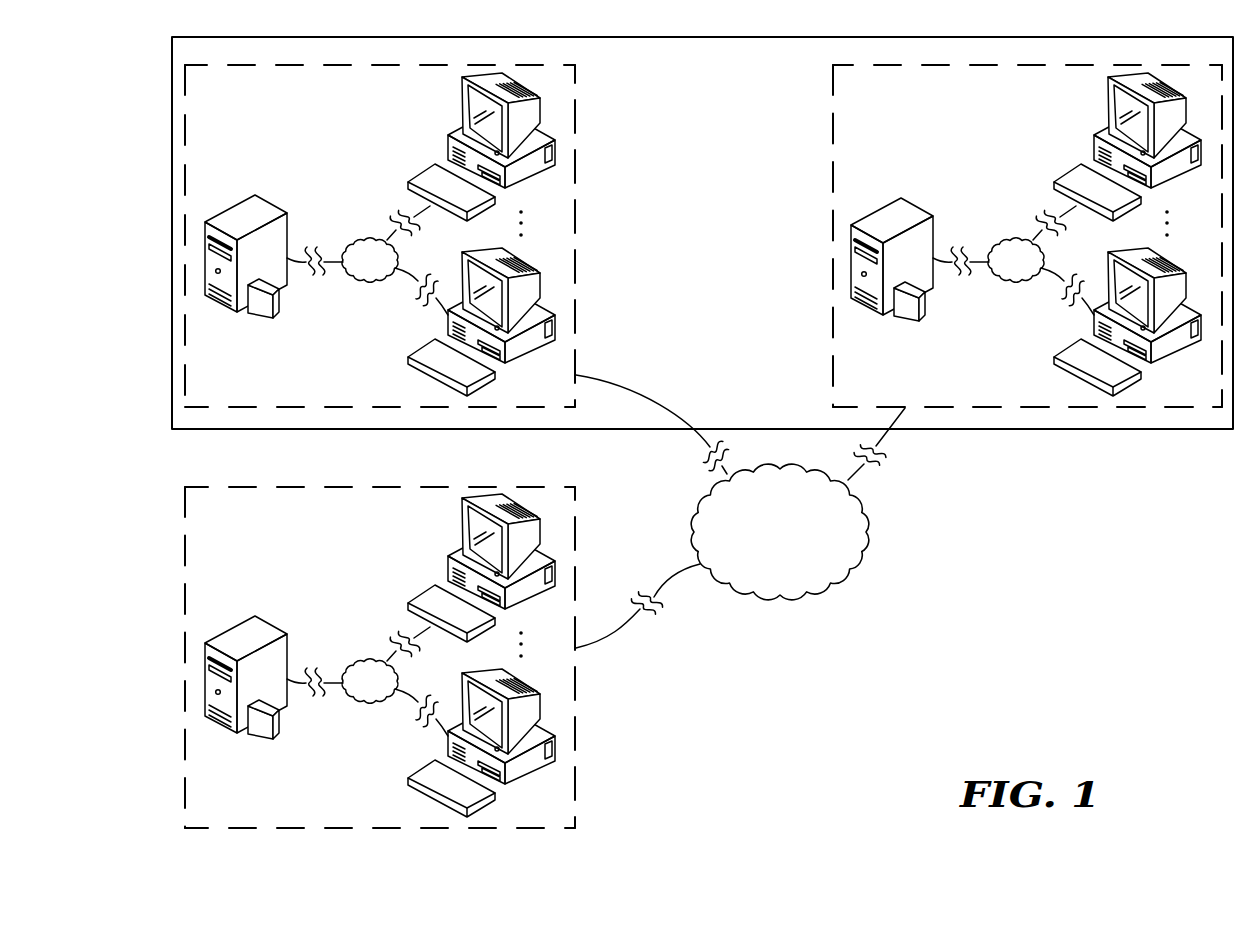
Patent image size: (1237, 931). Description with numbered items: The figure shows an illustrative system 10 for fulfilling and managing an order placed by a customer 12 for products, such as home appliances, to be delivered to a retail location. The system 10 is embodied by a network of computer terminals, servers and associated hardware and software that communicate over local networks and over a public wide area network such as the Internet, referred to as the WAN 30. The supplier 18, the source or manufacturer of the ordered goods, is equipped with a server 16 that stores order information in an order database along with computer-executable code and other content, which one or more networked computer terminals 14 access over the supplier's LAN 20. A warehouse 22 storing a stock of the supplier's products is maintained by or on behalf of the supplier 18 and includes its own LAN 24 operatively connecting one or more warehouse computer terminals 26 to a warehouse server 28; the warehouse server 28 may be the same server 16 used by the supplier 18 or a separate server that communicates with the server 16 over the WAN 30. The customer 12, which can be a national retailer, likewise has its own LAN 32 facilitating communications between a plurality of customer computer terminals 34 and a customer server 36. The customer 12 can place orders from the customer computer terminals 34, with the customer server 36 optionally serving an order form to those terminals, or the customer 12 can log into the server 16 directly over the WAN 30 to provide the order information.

The system 10 is at (1033, 440).
The customer 12 is at (383, 534).
The computer terminals 14 is at (530, 263).
The server 16 is at (262, 210).
The supplier 18 is at (373, 114).
The LAN 20 is at (383, 270).
The warehouse 22 is at (1028, 138).
The LAN 24 is at (1029, 270).
The warehouse computer terminals 26 is at (1173, 345).
The warehouse server 28 is at (890, 215).
The WAN 30 is at (812, 574).
The LAN 32 is at (383, 692).
The customer computer terminals 34 is at (528, 537).
The customer server 36 is at (243, 642).